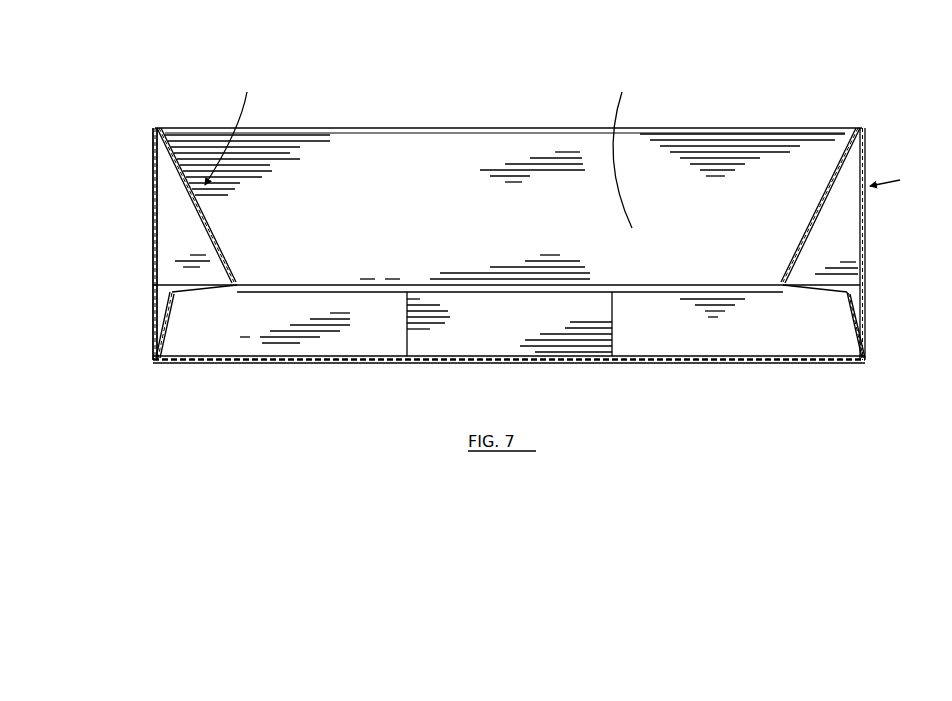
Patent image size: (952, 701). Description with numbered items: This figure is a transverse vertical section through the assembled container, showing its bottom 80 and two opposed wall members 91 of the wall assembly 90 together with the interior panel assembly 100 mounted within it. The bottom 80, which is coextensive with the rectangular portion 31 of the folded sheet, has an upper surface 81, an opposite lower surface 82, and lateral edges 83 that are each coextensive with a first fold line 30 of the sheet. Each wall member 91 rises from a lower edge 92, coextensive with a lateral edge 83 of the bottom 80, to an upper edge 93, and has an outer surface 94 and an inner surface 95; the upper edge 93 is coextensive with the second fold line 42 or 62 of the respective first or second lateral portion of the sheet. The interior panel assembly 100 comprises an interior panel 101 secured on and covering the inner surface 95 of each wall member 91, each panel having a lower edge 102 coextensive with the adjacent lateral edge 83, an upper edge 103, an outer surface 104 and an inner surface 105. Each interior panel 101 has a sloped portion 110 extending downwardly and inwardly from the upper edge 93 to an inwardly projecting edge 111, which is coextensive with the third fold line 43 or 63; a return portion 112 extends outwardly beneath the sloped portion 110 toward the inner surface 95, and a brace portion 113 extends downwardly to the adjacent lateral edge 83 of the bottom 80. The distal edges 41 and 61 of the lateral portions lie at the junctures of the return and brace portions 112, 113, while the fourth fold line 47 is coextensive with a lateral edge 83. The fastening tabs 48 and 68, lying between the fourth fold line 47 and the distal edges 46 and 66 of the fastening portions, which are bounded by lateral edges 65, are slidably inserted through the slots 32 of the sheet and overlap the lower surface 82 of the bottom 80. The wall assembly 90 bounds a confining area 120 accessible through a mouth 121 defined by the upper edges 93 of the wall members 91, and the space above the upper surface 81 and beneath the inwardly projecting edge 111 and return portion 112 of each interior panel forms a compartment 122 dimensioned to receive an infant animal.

The first fold line 30 is at (158, 362).
The rectangular portion 31 is at (508, 356).
The slot 32 is at (153, 361).
The distal edge 41 is at (170, 300).
The second fold line 42 is at (157, 128).
The third fold line 43 is at (236, 282).
The distal edge 46 is at (408, 363).
The fourth fold line 47 is at (160, 356).
The fastening tab 48 is at (236, 364).
The distal edge 61 is at (548, 294).
The second fold line 62 is at (504, 128).
The third fold line 63 is at (508, 290).
The lateral edge 65 is at (407, 318).
The distal edge 66 is at (494, 364).
The fastening tab 68 is at (566, 340).
The bottom 80 is at (332, 364).
The upper surface 81 is at (270, 357).
The lower surface 82 is at (276, 364).
The lateral edge 83 is at (156, 360).
The wall assembly 90 is at (896, 180).
The wall member 91 is at (157, 236).
The lower edge 92 is at (153, 360).
The upper edge 93 is at (155, 128).
The outer surface 94 is at (153, 185).
The inner surface 95 is at (157, 236).
The interior panel assembly 100 is at (237, 130).
The interior panel 101 is at (200, 204).
The lower edge 102 is at (160, 362).
The upper edge 103 is at (157, 128).
The outer surface 104 is at (478, 194).
The inner surface 105 is at (812, 236).
The sloped portion 110 is at (208, 228).
The inwardly projecting edge 111 is at (236, 283).
The return portion 112 is at (205, 292).
The brace portion 113 is at (168, 326).
The confining area 120 is at (631, 151).
The mouth 121 is at (682, 128).
The compartment 122 is at (780, 322).